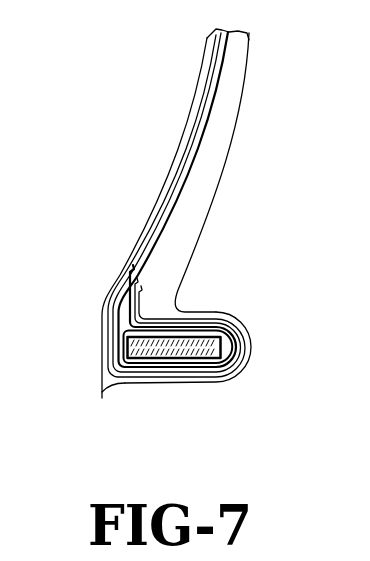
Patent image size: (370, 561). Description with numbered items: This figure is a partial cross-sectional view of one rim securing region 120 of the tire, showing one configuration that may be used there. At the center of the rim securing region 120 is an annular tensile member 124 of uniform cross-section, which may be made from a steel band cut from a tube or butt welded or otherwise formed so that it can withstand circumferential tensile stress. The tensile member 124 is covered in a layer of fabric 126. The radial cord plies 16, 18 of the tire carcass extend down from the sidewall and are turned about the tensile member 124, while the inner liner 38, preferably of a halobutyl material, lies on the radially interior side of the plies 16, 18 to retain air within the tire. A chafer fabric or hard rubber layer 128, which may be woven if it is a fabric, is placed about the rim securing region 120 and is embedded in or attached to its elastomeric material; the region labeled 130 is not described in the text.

The carcass ply 16 is at (145, 250).
The carcass ply 18 is at (183, 197).
The inner liner 38 is at (207, 80).
The rim securing region 120 is at (201, 390).
The annular tensile member 124 is at (214, 351).
The layer of fabric 126 is at (193, 340).
The chafer fabric 128 is at (243, 328).
The bead heel 130 is at (118, 362).